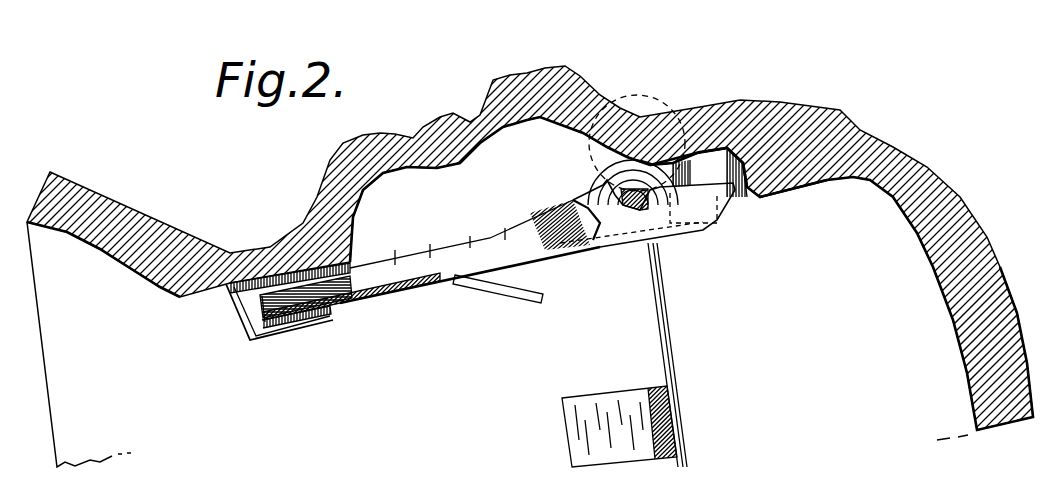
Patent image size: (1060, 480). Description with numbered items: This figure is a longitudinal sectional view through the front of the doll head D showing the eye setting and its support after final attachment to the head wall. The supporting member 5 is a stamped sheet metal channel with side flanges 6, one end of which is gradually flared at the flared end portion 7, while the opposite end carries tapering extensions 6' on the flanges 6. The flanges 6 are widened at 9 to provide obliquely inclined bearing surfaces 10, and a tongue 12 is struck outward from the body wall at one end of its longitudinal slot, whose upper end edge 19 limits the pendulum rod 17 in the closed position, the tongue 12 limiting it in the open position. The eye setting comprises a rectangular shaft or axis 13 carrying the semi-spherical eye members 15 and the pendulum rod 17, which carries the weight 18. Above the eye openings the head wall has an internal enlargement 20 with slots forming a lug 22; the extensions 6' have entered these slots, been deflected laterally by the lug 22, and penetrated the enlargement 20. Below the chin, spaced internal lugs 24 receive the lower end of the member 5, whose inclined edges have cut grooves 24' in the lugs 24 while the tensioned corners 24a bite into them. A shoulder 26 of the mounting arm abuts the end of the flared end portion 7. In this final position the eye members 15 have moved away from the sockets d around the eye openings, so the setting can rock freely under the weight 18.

The doll head D is at (987, 361).
The internal enlargement or projection 20 is at (787, 177).
The side flanges 6 is at (530, 240).
The tapering extensions 6' is at (709, 119).
The supporting member 5 is at (427, 292).
The tongue 12 is at (507, 290).
The widened portions of flanges 9 is at (604, 192).
The shaft or axis 13 is at (645, 202).
The obliquely inclined bearing surfaces 10 is at (620, 173).
The sockets d is at (620, 110).
The eye members 15 is at (665, 180).
The lug 22 is at (707, 178).
The upper end edge of slot 19 is at (664, 236).
The pendulum rod 17 is at (673, 350).
The weight 18 is at (647, 390).
The corners of flared end 24a is at (263, 297).
The internal lugs 24 is at (355, 321).
The flared end portion 7 is at (302, 328).
The grooves 24' is at (215, 324).
The shoulder 26 is at (257, 306).